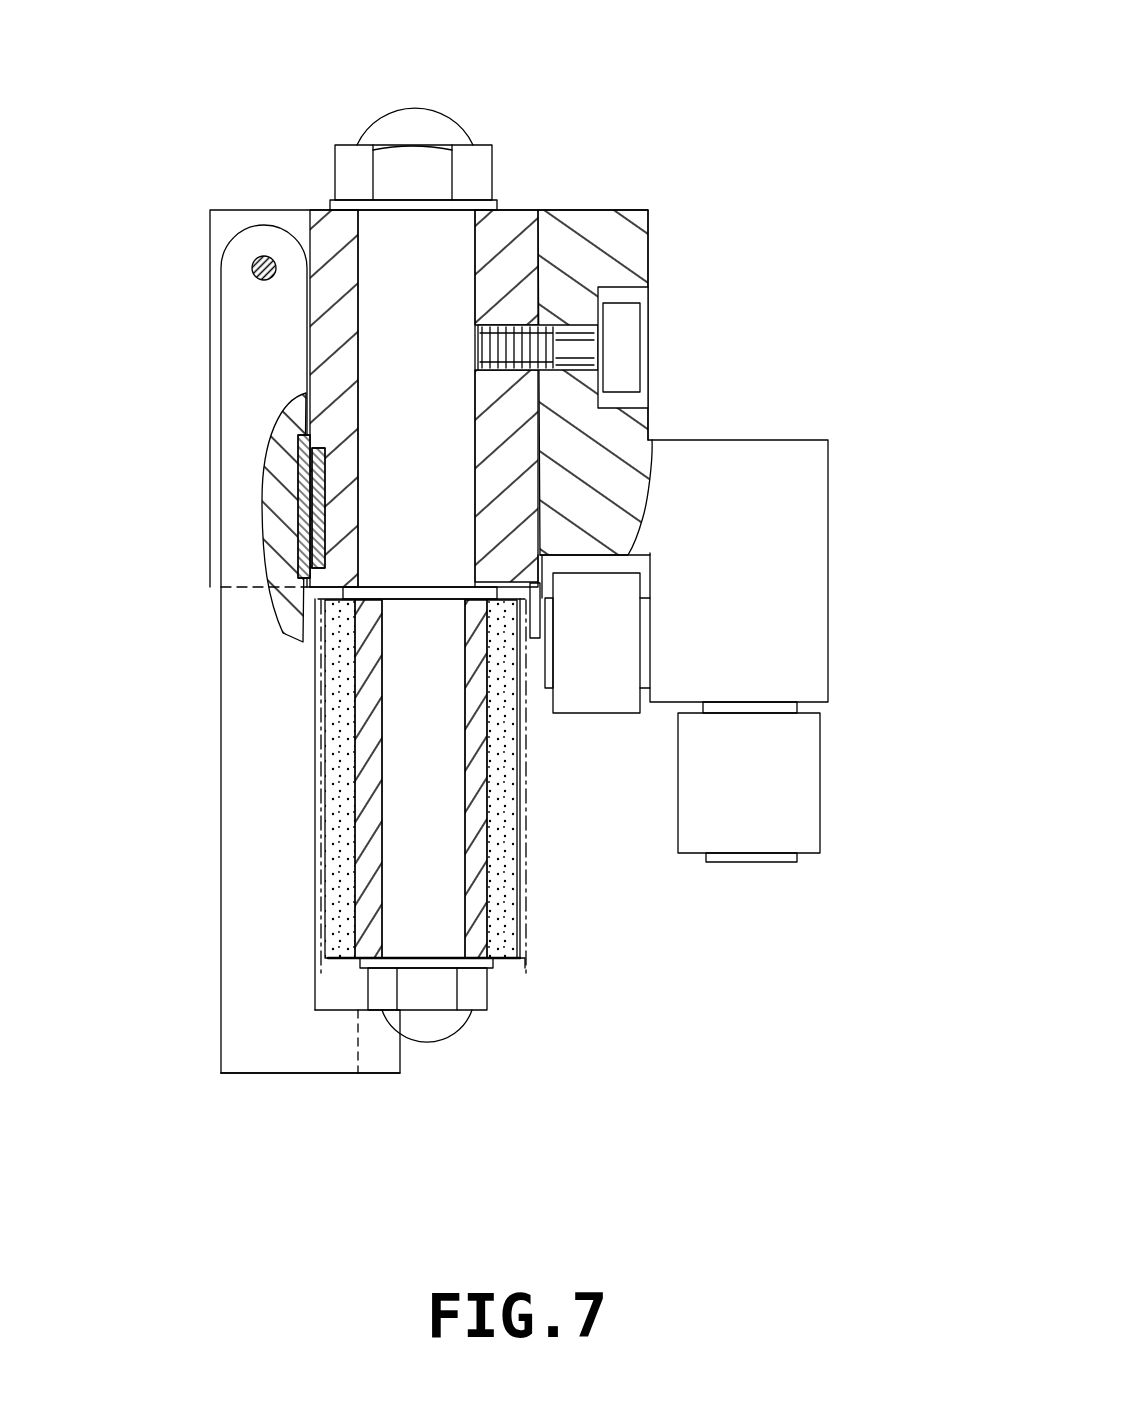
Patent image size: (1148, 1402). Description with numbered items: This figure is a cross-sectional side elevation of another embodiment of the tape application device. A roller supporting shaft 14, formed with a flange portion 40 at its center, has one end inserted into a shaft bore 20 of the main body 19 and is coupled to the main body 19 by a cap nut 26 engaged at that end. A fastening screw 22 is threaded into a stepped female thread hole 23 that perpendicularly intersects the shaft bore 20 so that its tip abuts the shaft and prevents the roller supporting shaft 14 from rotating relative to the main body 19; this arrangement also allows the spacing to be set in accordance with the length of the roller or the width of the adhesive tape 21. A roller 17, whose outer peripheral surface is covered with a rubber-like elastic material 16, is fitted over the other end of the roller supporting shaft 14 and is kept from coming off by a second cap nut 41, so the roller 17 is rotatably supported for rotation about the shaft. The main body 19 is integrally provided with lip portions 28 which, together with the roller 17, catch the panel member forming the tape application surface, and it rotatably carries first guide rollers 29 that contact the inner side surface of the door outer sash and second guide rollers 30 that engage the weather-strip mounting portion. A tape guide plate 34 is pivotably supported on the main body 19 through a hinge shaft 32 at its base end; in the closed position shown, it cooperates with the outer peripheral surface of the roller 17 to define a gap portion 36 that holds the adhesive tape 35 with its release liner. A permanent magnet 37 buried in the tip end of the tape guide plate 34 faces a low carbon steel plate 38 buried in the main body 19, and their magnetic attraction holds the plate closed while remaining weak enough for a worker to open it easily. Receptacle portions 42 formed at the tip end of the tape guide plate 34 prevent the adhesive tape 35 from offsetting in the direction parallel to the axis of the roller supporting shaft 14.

The roller supporting shaft 14 is at (385, 250).
The rubber-like elastic material 16 is at (510, 915).
The roller 17 is at (480, 877).
The main body 19 is at (648, 162).
The shaft bore 20 is at (370, 320).
The adhesive tape 21 is at (528, 967).
The fastening screw 22 is at (640, 351).
The stepped female threaded hole 23 is at (567, 325).
The cap nut 26 is at (405, 118).
The lip portion 28 is at (537, 617).
The first guide roller 29 is at (807, 772).
The second guide roller 30 is at (597, 695).
The hinge shaft 32 is at (250, 263).
The tape guide plate 34 is at (265, 920).
The adhesive tape with the release liner 35 is at (320, 763).
The gap portion 36 is at (318, 697).
The permanent magnet 37 is at (300, 470).
The low carbon steel plate 38 is at (322, 527).
The flange portion 40 is at (416, 592).
The cap nut 41 is at (440, 1025).
The receptacle portion 42 is at (316, 1053).